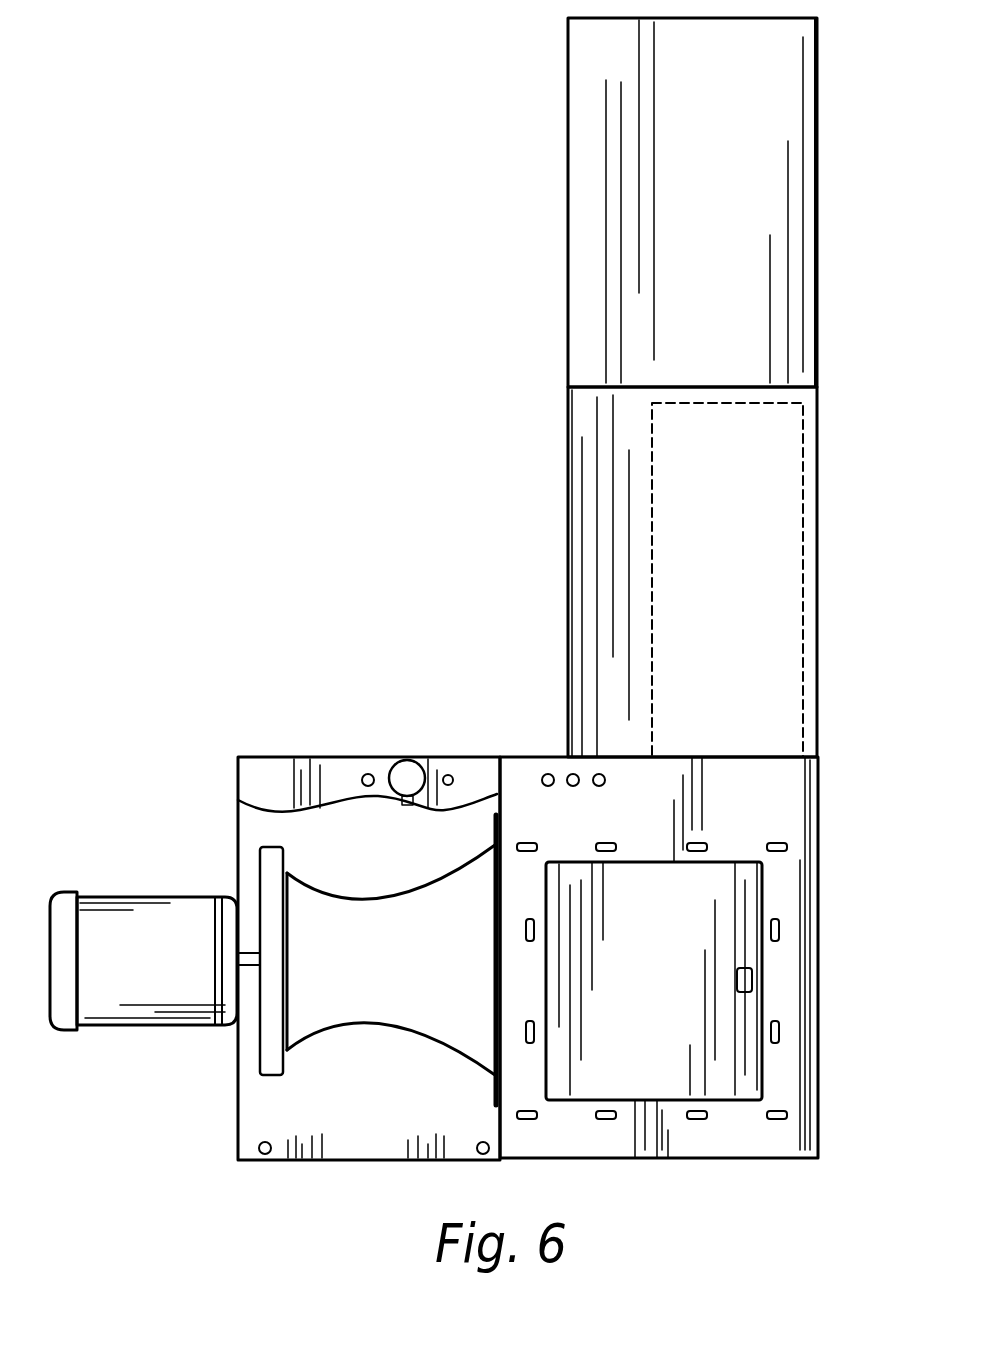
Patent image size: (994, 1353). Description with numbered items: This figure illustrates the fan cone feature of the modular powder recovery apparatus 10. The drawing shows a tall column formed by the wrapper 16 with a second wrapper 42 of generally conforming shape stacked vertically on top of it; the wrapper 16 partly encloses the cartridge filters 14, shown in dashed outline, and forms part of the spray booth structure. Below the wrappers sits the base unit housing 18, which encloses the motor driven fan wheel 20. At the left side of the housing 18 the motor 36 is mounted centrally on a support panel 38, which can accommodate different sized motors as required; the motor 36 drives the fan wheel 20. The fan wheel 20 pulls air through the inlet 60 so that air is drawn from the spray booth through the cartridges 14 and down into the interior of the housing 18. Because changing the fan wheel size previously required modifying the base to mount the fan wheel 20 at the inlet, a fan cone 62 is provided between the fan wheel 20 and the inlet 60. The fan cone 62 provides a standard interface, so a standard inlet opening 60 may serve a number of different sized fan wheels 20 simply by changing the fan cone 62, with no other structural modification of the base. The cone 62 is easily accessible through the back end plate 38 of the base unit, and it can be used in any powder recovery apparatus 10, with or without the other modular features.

The modular powder recovery apparatus 10 is at (369, 184).
The cartridge-style filters 14 is at (713, 490).
The wrapper 16 is at (819, 557).
The housing 18 is at (819, 925).
The fan wheel 20 is at (269, 846).
The motor 36 is at (157, 897).
The support panel 38 is at (238, 862).
The second wrapper 42 is at (819, 195).
The inlet 60 is at (493, 820).
The fan cone 62 is at (398, 881).